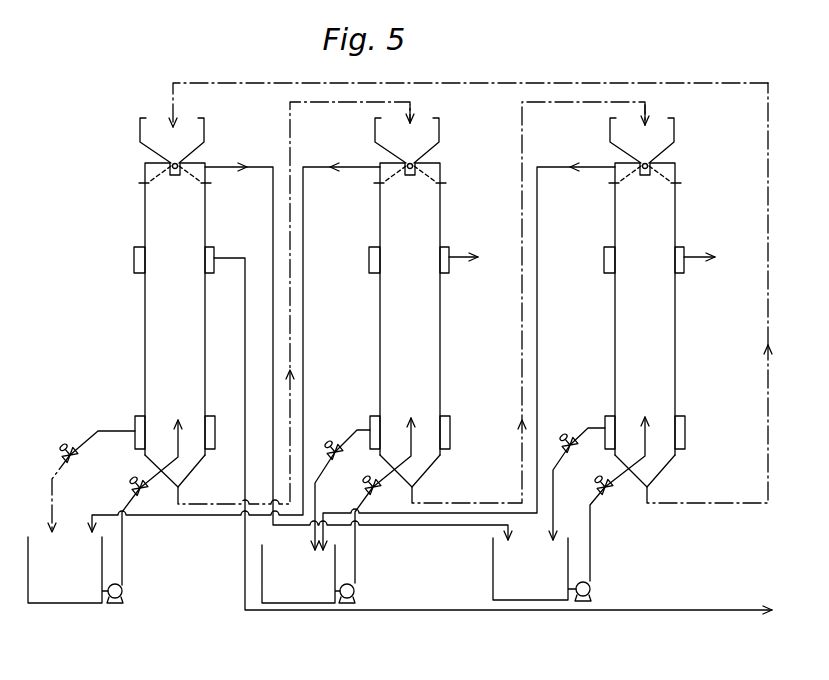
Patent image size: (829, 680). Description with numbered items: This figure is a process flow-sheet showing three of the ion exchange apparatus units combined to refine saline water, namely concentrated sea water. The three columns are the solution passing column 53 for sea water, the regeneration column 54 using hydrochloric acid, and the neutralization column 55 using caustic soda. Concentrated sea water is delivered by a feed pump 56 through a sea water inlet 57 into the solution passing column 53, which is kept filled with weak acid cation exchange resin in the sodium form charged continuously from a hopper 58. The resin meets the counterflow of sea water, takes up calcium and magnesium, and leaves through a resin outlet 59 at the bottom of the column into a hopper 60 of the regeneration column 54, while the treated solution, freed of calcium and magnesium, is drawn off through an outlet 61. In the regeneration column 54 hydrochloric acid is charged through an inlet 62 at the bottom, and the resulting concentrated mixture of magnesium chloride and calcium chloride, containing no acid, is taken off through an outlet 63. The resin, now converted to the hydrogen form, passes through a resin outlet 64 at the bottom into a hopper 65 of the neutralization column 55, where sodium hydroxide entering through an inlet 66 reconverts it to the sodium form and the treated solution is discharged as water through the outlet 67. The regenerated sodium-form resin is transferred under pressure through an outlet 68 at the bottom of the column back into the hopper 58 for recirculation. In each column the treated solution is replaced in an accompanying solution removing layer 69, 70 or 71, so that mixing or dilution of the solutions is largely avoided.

The solution passing column 53 is at (145, 322).
The regeneration column 54 is at (380, 325).
The neutralization column 55 is at (615, 331).
The feed pump 56 is at (128, 594).
The sea water inlet 57 is at (156, 491).
The hopper 58 is at (204, 130).
The resin outlet 59 is at (180, 490).
The hopper 60 is at (440, 128).
The outlet 61 is at (214, 255).
The inlet 62 is at (389, 488).
The outlet 63 is at (449, 255).
The resin outlet 64 is at (413, 488).
The hopper 65 is at (674, 125).
The inlet 66 is at (624, 487).
The outlet 67 is at (684, 255).
The outlet 68 is at (650, 490).
The solution removing layer 69 is at (163, 217).
The solution removing layer 70 is at (398, 217).
The solution removing layer 71 is at (633, 217).